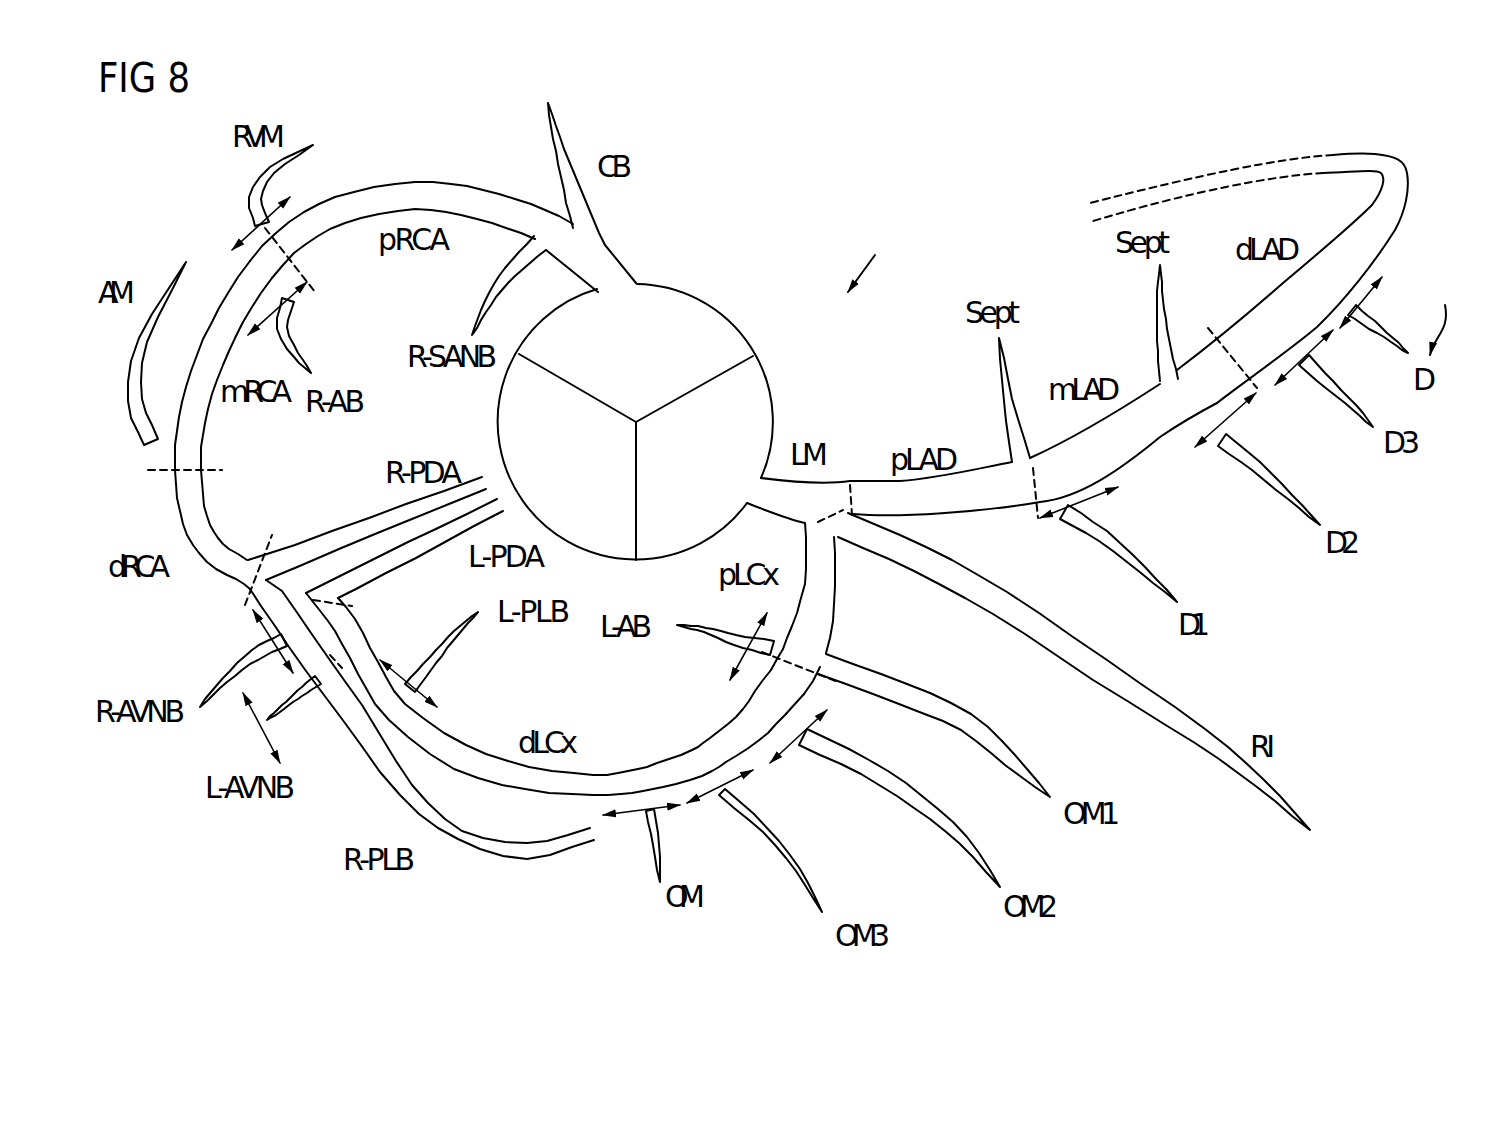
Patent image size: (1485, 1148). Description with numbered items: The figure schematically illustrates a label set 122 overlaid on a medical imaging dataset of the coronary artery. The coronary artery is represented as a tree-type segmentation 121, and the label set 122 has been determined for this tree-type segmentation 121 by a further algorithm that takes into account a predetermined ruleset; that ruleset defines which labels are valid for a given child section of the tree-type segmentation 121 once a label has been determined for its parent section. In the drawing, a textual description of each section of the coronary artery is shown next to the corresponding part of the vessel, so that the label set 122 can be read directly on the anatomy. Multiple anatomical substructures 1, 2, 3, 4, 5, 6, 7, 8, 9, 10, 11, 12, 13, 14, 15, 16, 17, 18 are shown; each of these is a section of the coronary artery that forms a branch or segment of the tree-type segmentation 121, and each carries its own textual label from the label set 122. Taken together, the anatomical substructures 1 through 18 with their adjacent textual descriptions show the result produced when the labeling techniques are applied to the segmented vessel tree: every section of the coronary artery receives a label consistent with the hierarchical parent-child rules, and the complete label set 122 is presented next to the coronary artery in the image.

The anatomical substructure 1 is at (410, 196).
The anatomical substructure 2 is at (213, 344).
The anatomical substructure 3 is at (197, 528).
The anatomical substructure 4 is at (364, 532).
The anatomical substructure 5 is at (795, 497).
The anatomical substructure 6 is at (960, 506).
The anatomical substructure 7 is at (1130, 427).
The anatomical substructure 8 is at (1290, 314).
The anatomical substructure 9 is at (1120, 531).
The anatomical substructure 10 is at (1275, 456).
The anatomical substructure 11 is at (818, 606).
The anatomical substructure 12 is at (908, 689).
The anatomical substructure 13 is at (628, 771).
The anatomical substructure 14 is at (872, 763).
The anatomical substructure 15 is at (397, 551).
The anatomical substructure 16 is at (397, 787).
The anatomical substructure 17 is at (933, 577).
The anatomical substructure 18 is at (425, 657).
The tree-type segmentation 121 is at (876, 255).
The label set 122 is at (1449, 312).